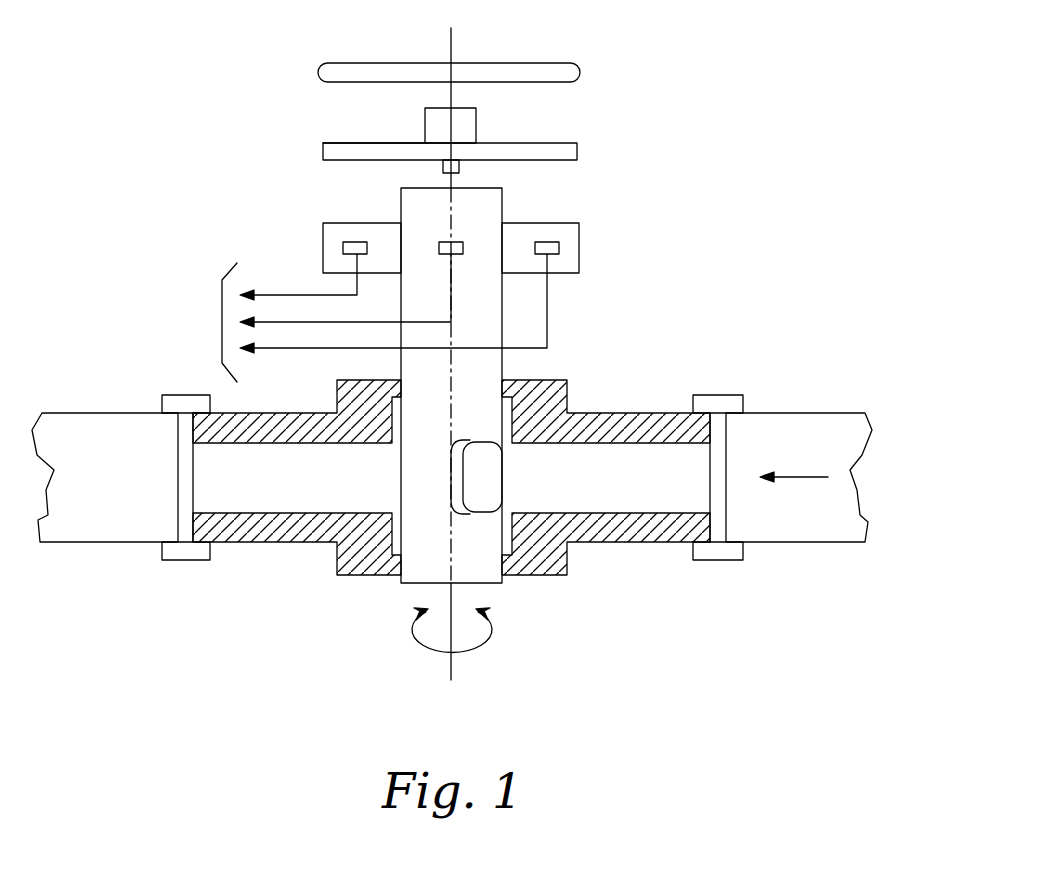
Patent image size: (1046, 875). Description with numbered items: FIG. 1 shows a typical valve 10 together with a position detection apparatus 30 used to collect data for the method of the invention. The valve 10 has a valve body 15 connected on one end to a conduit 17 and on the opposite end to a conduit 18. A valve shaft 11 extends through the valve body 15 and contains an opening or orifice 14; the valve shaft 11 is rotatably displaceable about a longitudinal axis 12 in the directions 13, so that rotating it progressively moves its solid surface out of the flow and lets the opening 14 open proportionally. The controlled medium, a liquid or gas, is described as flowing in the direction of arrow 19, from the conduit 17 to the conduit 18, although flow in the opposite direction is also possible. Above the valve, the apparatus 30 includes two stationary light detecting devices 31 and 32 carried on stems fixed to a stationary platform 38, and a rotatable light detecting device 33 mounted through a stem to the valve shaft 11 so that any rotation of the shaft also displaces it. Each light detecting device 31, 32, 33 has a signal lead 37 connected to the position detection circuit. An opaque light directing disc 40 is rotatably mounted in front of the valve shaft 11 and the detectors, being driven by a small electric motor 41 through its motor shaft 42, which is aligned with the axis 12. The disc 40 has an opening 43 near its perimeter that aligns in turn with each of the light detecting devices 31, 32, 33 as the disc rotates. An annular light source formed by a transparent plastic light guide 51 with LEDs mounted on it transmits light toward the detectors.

The valve 10 is at (720, 335).
The valve shaft 11 is at (502, 200).
The longitudinal axis 12 is at (451, 668).
The directions of rotation 13 is at (492, 630).
The opening or orifice 14 is at (495, 483).
The valve body 15 is at (640, 413).
The conduit 17 is at (823, 413).
The conduit 18 is at (100, 545).
The arrow 19 is at (813, 477).
The apparatus 30 is at (694, 113).
The stationary light detecting device 31 is at (357, 242).
The stationary light detecting device 32 is at (557, 248).
The rotatable light detecting device 33 is at (463, 248).
The signal lead 37 is at (277, 348).
The stationary platform 38 is at (580, 273).
The light directing disc 40 is at (565, 143).
The electric motor 41 is at (476, 125).
The electric motor shaft 42 is at (459, 168).
The opening 43 is at (353, 143).
The transparent plastic light guide 51 is at (378, 63).